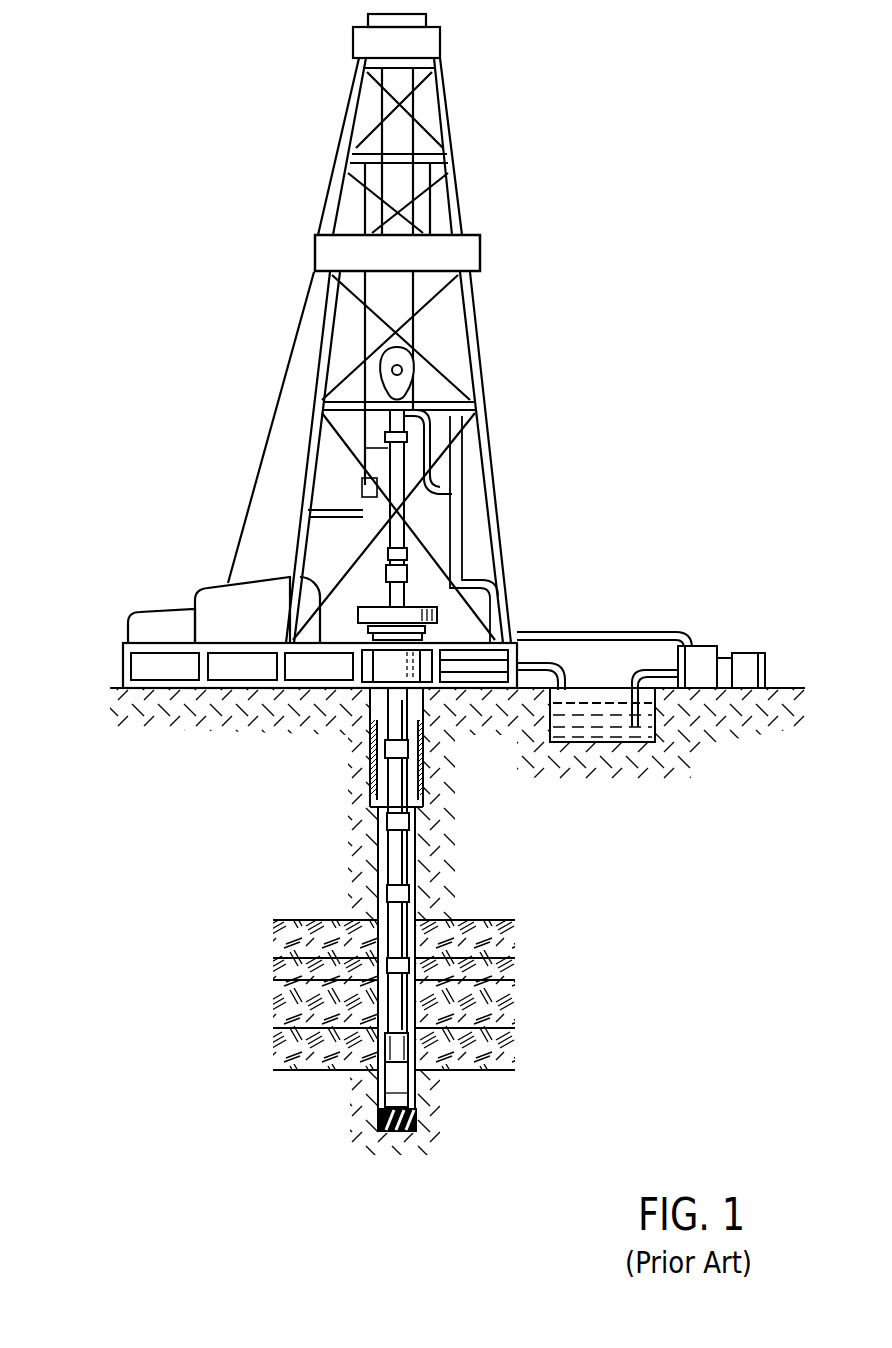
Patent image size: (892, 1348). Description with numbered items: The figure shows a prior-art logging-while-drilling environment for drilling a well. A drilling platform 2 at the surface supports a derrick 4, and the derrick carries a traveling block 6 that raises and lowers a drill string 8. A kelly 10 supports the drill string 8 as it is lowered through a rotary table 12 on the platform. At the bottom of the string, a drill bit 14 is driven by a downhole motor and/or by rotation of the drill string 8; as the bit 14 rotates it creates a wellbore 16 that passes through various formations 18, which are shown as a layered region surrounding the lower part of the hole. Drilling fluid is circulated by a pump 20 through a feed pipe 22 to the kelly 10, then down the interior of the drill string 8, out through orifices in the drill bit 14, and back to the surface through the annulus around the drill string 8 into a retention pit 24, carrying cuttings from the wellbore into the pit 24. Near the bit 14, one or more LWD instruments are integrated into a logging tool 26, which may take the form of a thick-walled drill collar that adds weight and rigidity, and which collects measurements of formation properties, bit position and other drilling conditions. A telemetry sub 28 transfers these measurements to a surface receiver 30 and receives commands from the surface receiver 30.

The drilling platform 2 is at (118, 663).
The derrick 4 is at (458, 190).
The traveling block 6 is at (405, 368).
The drill string 8 is at (405, 870).
The kelly 10 is at (400, 458).
The rotary table 12 is at (413, 607).
The drill bit 14 is at (417, 1117).
The wellbore 16 is at (417, 883).
The formations 18 is at (540, 920).
The pump 20 is at (698, 667).
The feed pipe 22 is at (612, 628).
The retention pit 24 is at (572, 728).
The logging tool 26 is at (390, 1078).
The telemetry sub 28 is at (390, 1050).
The surface receiver 30 is at (408, 555).